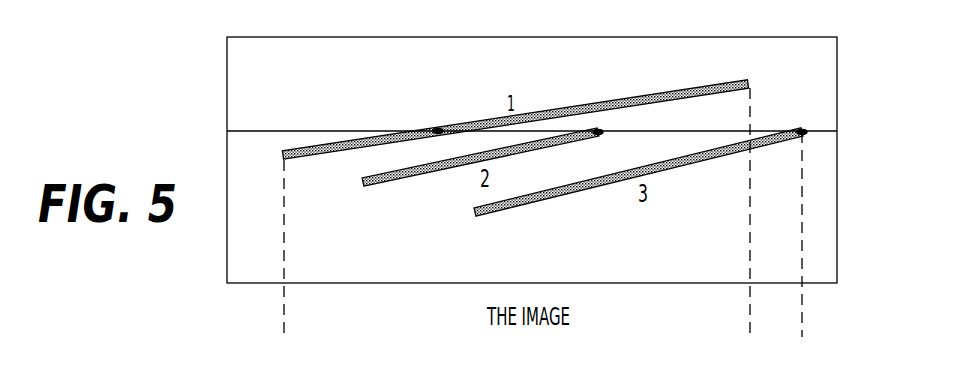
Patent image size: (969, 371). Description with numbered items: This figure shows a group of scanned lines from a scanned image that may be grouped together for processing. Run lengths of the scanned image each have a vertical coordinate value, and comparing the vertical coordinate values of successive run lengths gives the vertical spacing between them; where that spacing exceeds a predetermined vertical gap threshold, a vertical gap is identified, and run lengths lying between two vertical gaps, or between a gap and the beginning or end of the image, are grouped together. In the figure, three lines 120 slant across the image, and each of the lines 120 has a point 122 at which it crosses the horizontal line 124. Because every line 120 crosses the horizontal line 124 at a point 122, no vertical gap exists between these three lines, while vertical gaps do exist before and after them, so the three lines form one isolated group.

The lines 120 is at (543, 113).
The point 122 is at (437, 131).
The horizontal line 124 is at (259, 131).